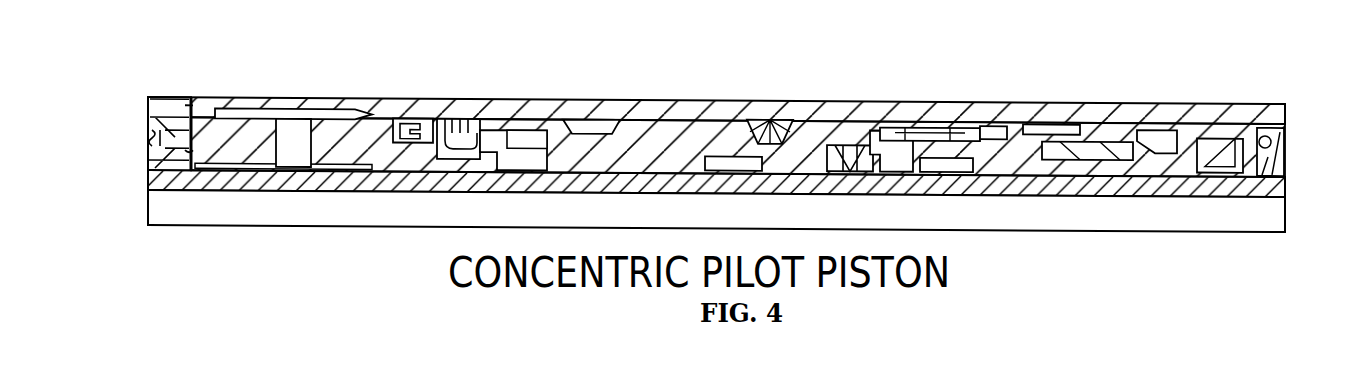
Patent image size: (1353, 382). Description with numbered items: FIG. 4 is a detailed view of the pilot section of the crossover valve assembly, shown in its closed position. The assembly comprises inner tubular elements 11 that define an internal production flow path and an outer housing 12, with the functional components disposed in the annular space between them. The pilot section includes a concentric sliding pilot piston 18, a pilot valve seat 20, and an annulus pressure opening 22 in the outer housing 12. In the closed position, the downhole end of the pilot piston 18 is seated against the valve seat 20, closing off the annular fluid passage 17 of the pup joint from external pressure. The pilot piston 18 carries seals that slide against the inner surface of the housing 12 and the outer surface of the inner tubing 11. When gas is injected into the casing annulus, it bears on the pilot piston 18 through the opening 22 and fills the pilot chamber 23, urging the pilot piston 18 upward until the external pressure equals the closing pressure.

The inner tubular elements 11 is at (352, 191).
The outer housing 12 is at (405, 99).
The annular fluid passage 17 is at (150, 140).
The concentric sliding pilot piston 18 is at (638, 130).
The pilot valve seat 20 is at (181, 100).
The annulus pressure opening 22 is at (269, 89).
The pilot chamber 23 is at (298, 137).